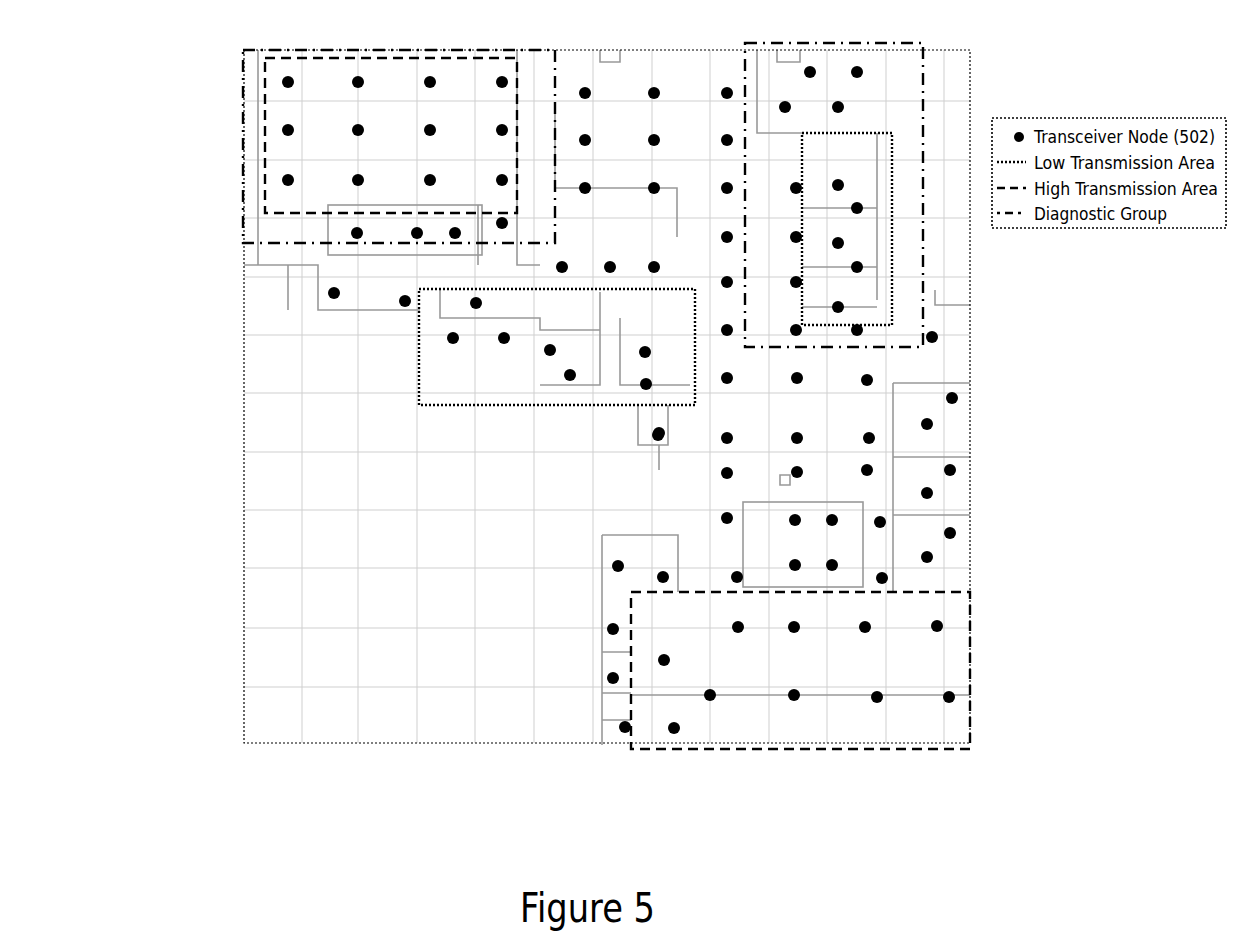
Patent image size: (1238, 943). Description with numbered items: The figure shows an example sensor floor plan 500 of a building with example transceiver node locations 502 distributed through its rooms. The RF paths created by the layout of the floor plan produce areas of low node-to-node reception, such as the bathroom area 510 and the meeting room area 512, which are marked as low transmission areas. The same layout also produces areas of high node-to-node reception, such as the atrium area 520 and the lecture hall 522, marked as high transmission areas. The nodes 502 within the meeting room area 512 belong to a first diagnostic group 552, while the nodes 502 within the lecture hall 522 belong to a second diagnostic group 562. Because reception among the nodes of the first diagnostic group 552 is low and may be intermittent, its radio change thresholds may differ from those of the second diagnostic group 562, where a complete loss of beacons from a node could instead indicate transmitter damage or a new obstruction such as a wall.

The sensor floor plan 500 is at (114, 59).
The transceiver node 502 is at (503, 80).
The bathroom area 510 is at (672, 289).
The meeting room area 512 is at (872, 133).
The atrium area 520 is at (950, 592).
The lecture hall 522 is at (500, 56).
The first diagnostic group 552 is at (812, 43).
The second diagnostic group 562 is at (326, 50).